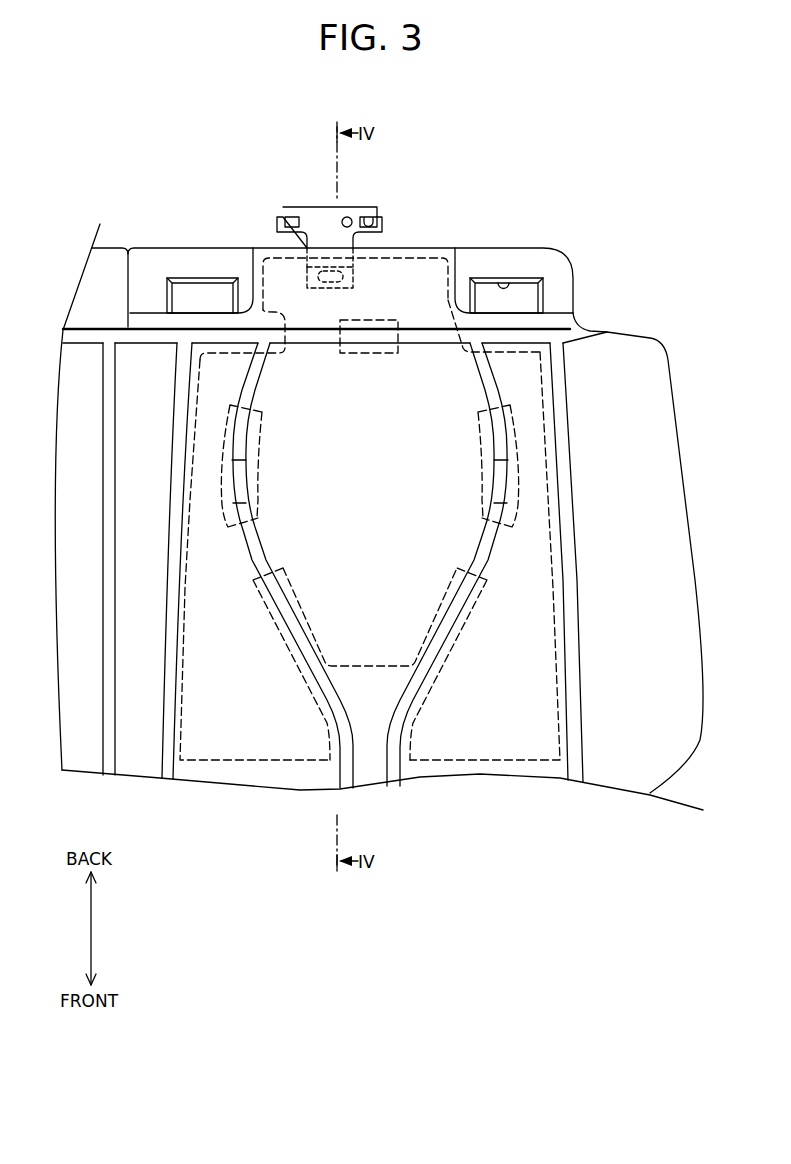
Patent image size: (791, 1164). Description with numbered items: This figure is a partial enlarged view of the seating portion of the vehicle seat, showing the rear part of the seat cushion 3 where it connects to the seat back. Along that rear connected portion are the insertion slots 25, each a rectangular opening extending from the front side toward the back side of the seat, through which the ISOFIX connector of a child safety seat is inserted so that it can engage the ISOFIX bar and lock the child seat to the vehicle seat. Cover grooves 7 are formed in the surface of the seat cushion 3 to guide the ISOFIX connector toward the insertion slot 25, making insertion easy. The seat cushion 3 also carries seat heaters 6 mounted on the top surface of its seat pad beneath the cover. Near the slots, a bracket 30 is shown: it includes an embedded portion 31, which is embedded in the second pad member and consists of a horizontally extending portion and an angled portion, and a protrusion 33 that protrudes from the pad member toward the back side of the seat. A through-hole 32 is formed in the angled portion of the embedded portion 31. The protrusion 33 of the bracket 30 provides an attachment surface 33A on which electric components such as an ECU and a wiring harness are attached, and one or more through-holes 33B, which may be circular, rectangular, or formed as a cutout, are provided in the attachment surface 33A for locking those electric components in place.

The seat cushion 3 is at (633, 158).
The seat heaters 6 is at (473, 733).
The cover grooves 7 is at (397, 767).
The insertion slots 25 is at (510, 285).
The bracket 30 is at (459, 186).
The embedded portion 31 is at (371, 272).
The through-hole 32 is at (318, 278).
The protrusion 33 is at (359, 200).
The attachment surface 33A is at (323, 218).
The through-holes 33B is at (370, 212).